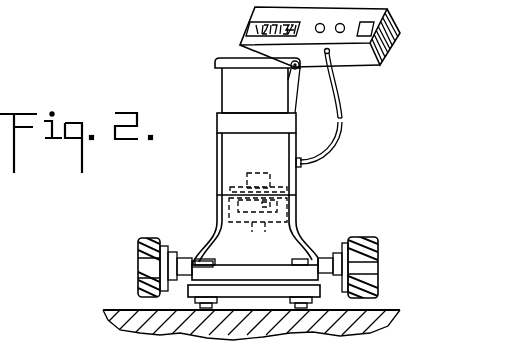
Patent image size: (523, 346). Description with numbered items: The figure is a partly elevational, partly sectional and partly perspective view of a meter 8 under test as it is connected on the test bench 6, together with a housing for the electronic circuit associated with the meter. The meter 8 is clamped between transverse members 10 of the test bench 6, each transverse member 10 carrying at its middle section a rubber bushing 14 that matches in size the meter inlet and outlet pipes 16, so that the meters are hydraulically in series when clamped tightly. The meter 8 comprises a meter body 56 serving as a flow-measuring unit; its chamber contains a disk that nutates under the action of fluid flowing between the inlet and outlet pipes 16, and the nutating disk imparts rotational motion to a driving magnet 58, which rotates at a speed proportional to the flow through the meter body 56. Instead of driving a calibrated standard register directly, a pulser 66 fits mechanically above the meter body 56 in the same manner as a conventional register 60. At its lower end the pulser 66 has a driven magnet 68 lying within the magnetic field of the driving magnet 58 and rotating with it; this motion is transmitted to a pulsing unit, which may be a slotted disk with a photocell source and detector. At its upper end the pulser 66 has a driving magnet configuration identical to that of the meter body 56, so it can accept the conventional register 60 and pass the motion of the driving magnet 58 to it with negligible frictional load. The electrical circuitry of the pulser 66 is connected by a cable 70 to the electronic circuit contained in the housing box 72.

The test bench 6 is at (118, 310).
The meter 8 is at (268, 183).
The transverse members 10 is at (142, 240).
The rubber bushing 14 is at (168, 245).
The inlet and outlet pipes 16 is at (183, 257).
The meter body 56 is at (300, 235).
The driving magnet 58 is at (277, 210).
The register 60 is at (232, 92).
The pulser 66 is at (226, 147).
The driven magnet 68 is at (270, 181).
The cable 70 is at (340, 100).
The housing box 72 is at (392, 44).